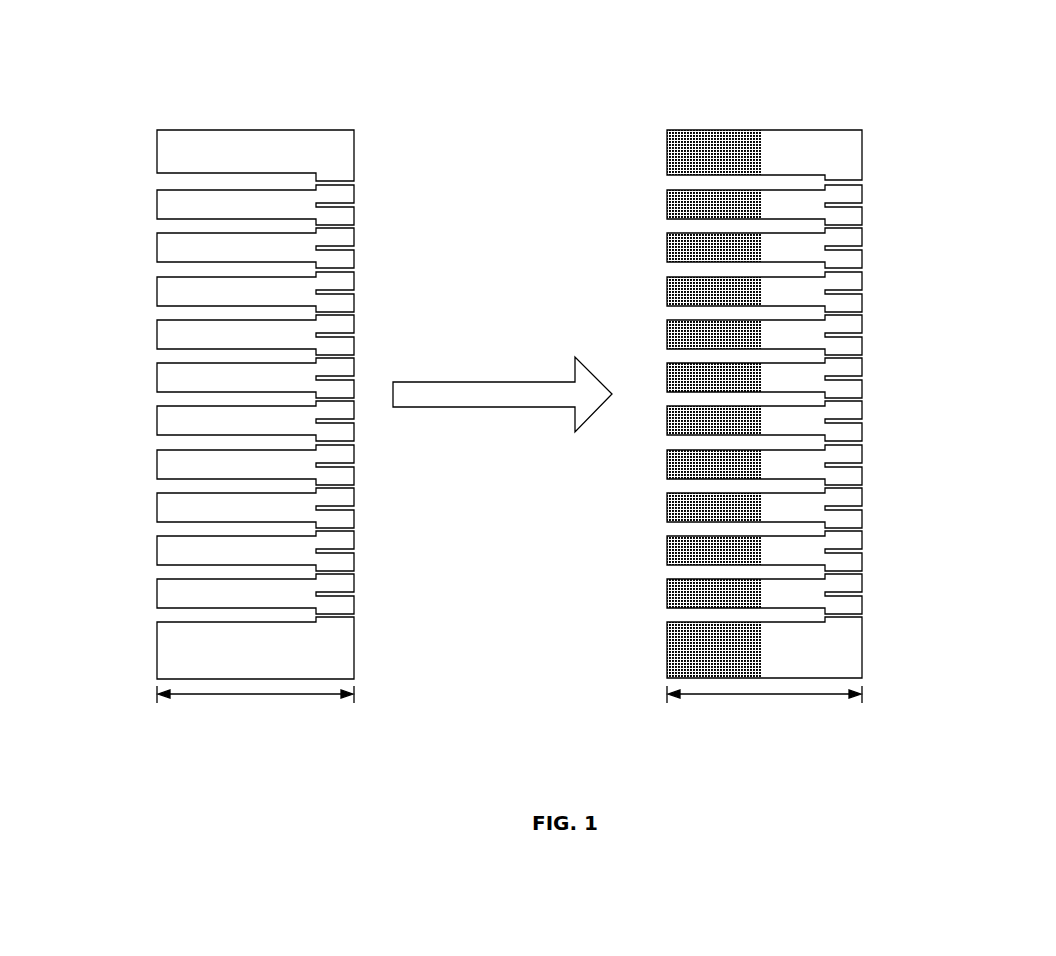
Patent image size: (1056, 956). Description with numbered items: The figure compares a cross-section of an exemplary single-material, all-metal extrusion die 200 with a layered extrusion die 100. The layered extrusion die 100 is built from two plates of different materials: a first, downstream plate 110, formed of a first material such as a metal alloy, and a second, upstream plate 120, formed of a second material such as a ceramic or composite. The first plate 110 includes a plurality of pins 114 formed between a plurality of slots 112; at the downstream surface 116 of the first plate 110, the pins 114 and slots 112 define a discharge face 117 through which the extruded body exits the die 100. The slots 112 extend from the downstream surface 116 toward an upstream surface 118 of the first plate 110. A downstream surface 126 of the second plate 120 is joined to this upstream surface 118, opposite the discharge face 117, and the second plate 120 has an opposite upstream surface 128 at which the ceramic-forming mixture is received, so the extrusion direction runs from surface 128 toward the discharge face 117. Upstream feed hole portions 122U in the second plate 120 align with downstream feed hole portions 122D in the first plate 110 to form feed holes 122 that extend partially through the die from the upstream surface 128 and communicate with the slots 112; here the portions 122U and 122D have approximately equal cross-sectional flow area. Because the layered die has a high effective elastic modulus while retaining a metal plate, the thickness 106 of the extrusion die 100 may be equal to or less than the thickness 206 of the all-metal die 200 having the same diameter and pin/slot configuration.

The extrusion die 100 is at (823, 402).
The all-metal extrusion die 200 is at (338, 108).
The thickness of extrusion die 106 is at (760, 693).
The thickness of all-metal extrusion die 206 is at (250, 693).
The first plate 110 is at (852, 116).
The slots 112 is at (862, 277).
The pins 114 is at (860, 263).
The downstream surface of first plate 116 is at (862, 655).
The discharge face 117 is at (887, 327).
The upstream surface of first plate 118 is at (758, 648).
The second plate 120 is at (754, 116).
The feed holes 122 is at (668, 183).
The upstream feed hole portions 122U is at (716, 189).
The downstream feed hole portions 122D is at (803, 185).
The downstream surface of second plate 126 is at (762, 545).
The upstream surface of second plate 128 is at (667, 142).